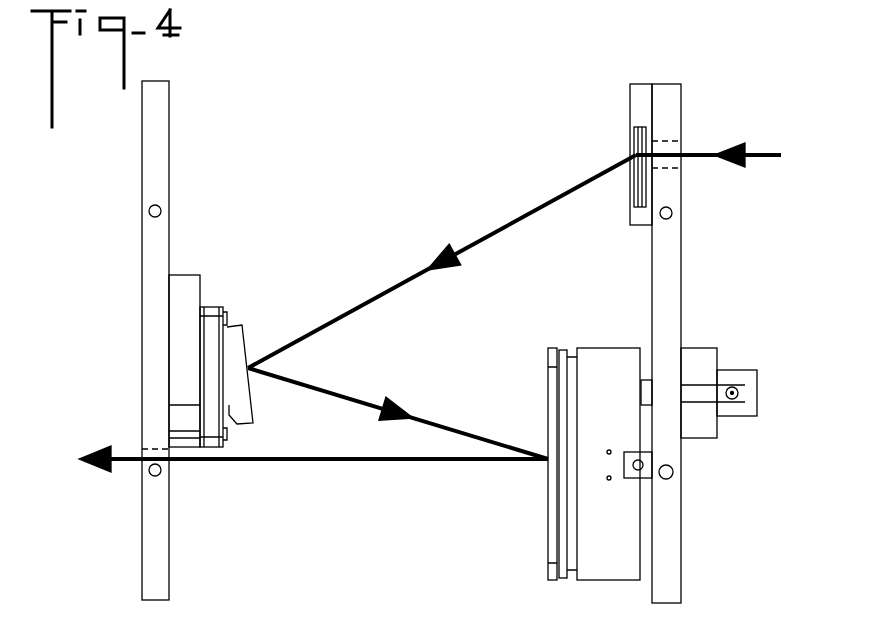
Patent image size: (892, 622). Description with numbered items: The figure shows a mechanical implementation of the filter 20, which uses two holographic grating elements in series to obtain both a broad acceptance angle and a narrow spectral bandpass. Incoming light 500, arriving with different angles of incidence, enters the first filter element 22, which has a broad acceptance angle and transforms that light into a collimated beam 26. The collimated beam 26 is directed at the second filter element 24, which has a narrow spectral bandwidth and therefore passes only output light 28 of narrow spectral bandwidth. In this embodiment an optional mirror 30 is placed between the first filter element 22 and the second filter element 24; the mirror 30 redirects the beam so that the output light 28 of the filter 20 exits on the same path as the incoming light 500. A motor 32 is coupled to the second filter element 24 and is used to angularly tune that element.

The filter 20 is at (405, 110).
The first filter element 22 is at (631, 152).
The second filter element 24 is at (547, 383).
The collimated beam 26 is at (476, 241).
The output light 28 is at (358, 462).
The mirror 30 is at (247, 340).
The motor 32 is at (728, 371).
The incoming light 500 is at (757, 152).